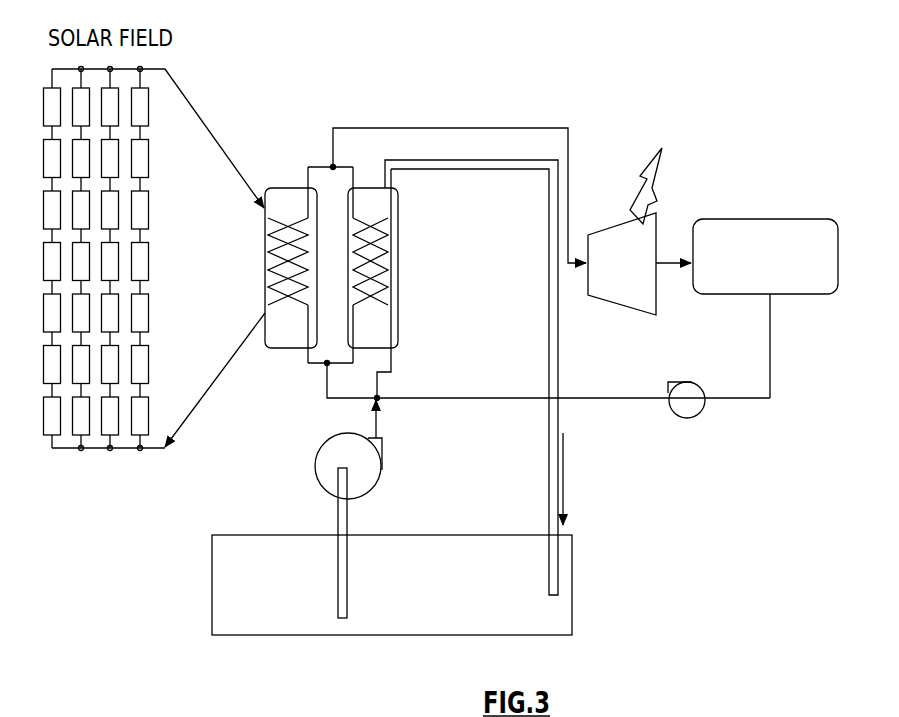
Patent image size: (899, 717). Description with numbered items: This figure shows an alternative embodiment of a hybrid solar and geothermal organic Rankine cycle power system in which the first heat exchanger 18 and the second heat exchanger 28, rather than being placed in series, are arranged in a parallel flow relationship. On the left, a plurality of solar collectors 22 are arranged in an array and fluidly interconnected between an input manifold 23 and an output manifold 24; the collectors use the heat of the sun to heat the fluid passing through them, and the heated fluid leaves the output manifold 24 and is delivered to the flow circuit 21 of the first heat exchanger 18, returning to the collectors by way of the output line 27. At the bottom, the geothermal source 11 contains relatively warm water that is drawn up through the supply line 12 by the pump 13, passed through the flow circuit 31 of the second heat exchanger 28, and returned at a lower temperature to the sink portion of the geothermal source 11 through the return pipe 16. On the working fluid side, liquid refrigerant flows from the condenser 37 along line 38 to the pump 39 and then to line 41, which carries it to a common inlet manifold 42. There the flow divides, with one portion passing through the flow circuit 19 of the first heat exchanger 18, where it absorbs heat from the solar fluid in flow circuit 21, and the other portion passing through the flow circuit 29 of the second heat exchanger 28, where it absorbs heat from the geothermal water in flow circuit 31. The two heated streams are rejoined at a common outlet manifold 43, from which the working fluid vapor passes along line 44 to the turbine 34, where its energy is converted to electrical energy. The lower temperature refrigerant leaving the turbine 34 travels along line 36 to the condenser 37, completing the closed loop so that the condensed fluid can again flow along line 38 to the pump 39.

The geothermal source 11 is at (562, 608).
The supply line 12 is at (347, 528).
The pump 13 is at (382, 470).
The return pipe 16 is at (560, 410).
The first heat exchanger 18 is at (290, 188).
The first flow circuit 19 is at (302, 305).
The flow circuit 21 is at (268, 252).
The solar collectors 22 is at (143, 216).
The input manifold 23 is at (92, 450).
The output manifold 24 is at (166, 66).
The output line 27 is at (212, 378).
The second heat exchanger 28 is at (368, 188).
The flow circuit 29 is at (360, 308).
The flow circuit 31 is at (392, 265).
The turbine 34 is at (652, 233).
The line 36 is at (660, 270).
The condenser 37 is at (776, 222).
The line 38 is at (770, 382).
The pump 39 is at (696, 406).
The line 41 is at (622, 398).
The common inlet manifold 42 is at (318, 363).
The common outlet manifold 43 is at (322, 165).
The line 44 is at (466, 127).